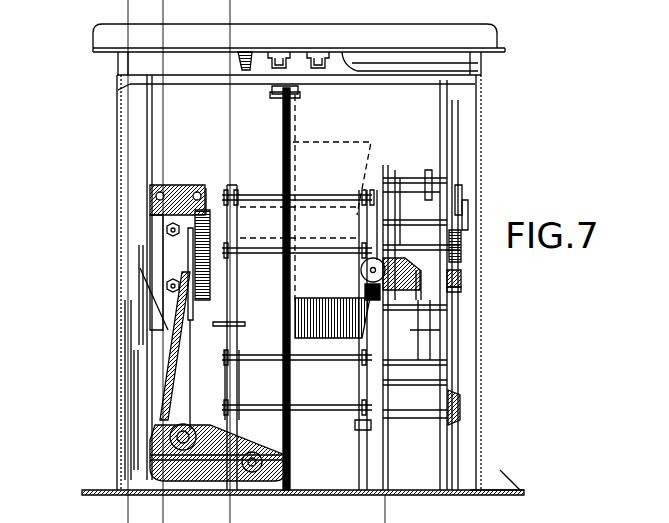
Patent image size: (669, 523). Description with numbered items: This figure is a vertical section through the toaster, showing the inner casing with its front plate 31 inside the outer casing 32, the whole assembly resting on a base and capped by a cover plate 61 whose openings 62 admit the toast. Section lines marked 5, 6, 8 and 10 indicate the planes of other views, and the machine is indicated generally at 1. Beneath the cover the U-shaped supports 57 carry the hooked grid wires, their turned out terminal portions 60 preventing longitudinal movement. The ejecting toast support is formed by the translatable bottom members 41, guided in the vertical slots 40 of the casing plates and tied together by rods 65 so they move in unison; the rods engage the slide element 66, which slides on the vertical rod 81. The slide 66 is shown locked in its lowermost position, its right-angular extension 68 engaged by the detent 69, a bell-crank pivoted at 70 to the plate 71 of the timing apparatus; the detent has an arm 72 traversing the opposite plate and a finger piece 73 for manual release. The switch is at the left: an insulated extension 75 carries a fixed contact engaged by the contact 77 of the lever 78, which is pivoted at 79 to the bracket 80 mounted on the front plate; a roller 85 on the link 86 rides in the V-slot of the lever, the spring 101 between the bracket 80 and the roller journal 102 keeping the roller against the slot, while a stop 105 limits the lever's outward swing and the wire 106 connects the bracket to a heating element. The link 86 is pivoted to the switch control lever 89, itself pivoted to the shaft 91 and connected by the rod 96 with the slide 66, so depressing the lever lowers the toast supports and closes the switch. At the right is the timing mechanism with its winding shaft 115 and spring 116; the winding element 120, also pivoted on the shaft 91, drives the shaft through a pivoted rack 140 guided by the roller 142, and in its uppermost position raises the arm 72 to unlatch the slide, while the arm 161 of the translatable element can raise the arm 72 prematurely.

The machine 1 is at (504, 490).
The section line 5 is at (136, 12).
The section line 6 is at (150, 12).
The section line 8 is at (222, 12).
The element 10 is at (368, 512).
The front plate 31 is at (340, 55).
The outer casing 32 is at (117, 130).
The slots 40 is at (238, 285).
The translatable bottom members 41 is at (239, 385).
The supports 57 is at (322, 58).
The turned out terminal portions 60 is at (333, 50).
The cover plate 61 is at (447, 26).
The openings 62 is at (330, 502).
The rods 65 is at (266, 246).
The slide element 66 is at (292, 441).
The right-angular extension 68 is at (336, 142).
The detent 69 is at (366, 310).
The pivot 70 is at (366, 266).
The plate 71 is at (379, 256).
The arm 72 is at (461, 282).
The finger piece 73 is at (418, 298).
The extension 75 is at (275, 464).
The contact 77 is at (172, 437).
The lever 78 is at (188, 395).
The pivot 79 is at (183, 262).
The bracket 80 is at (182, 186).
The vertical rod 81 is at (282, 118).
The roller 85 is at (216, 350).
The link 86 is at (139, 250).
The lever 89 is at (133, 431).
The shaft 91 is at (125, 352).
The rod 96 is at (235, 448).
The spring 101 is at (212, 182).
The journal 102 is at (225, 322).
The stop 105 is at (190, 238).
The wire 106 is at (167, 377).
The winding shaft 115 is at (399, 250).
The spring 116 is at (458, 198).
The winding element 120 is at (452, 406).
The rack 140 is at (459, 208).
The roller 142 is at (463, 240).
The arm 161 is at (460, 290).